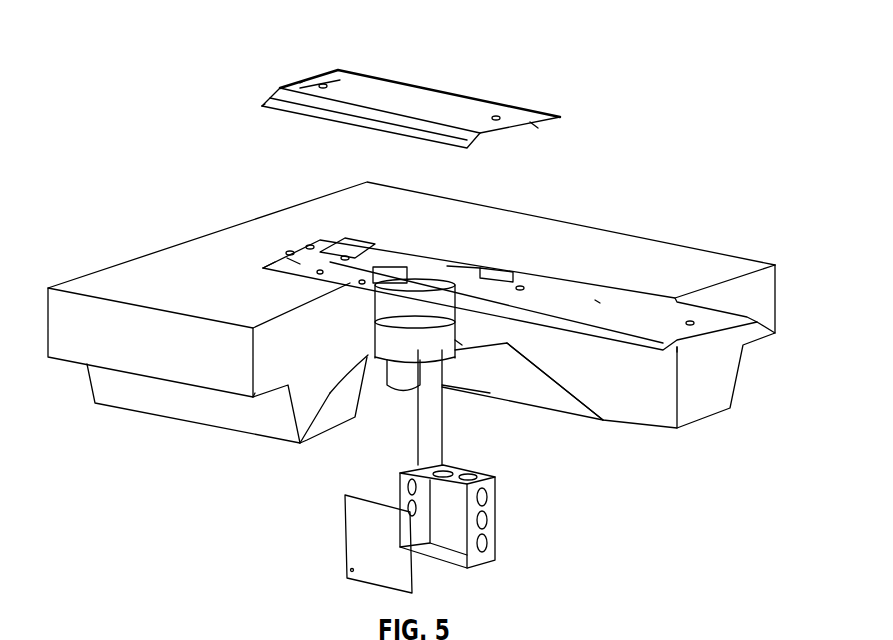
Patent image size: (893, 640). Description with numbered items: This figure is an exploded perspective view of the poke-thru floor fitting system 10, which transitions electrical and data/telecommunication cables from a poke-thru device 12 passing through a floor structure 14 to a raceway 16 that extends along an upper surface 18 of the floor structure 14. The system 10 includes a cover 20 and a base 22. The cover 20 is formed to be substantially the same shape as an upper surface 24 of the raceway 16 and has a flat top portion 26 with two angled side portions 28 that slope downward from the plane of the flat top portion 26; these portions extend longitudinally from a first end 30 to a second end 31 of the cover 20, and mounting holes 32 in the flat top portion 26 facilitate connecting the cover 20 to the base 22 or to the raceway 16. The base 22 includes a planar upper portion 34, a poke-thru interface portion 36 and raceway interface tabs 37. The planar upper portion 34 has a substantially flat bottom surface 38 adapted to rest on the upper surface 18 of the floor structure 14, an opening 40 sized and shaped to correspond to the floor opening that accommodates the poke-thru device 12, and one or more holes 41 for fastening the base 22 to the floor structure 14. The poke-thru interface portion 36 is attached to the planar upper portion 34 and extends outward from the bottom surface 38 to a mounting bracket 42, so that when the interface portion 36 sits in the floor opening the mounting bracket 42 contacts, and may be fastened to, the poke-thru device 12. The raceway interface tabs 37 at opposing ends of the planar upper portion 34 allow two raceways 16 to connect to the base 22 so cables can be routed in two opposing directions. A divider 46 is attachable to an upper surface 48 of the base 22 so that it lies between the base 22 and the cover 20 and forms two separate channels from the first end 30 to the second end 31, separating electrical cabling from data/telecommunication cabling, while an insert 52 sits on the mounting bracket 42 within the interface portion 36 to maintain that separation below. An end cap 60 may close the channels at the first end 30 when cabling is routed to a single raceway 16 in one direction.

The poke-thru floor fitting system 10 is at (262, 36).
The poke-thru device 12 is at (447, 392).
The floor structure 14 is at (88, 322).
The raceway 16 is at (680, 349).
The upper surface 18 is at (725, 262).
The cover 20 is at (428, 86).
The base 22 is at (460, 272).
The upper surface 24 is at (595, 307).
The flat top portion 26 is at (357, 83).
The angled side portions 28 is at (268, 106).
The first end 30 is at (303, 82).
The second end 31 is at (536, 126).
The mounting holes 32 is at (323, 84).
The planar upper portion 34 is at (335, 300).
The poke-thru interface portion 36 is at (330, 425).
The raceway interface tabs 37 is at (290, 251).
The bottom surface 38 is at (318, 287).
The opening 40 is at (375, 300).
The holes 41 is at (380, 392).
The mounting bracket 42 is at (385, 322).
The divider 46 is at (425, 262).
The upper surface 48 is at (365, 258).
The insert 52 is at (455, 350).
The end cap 60 is at (275, 258).